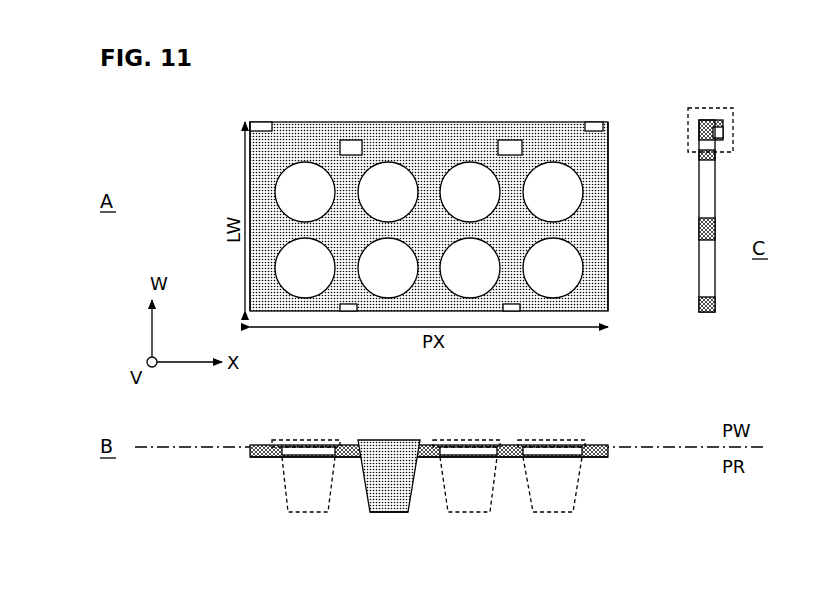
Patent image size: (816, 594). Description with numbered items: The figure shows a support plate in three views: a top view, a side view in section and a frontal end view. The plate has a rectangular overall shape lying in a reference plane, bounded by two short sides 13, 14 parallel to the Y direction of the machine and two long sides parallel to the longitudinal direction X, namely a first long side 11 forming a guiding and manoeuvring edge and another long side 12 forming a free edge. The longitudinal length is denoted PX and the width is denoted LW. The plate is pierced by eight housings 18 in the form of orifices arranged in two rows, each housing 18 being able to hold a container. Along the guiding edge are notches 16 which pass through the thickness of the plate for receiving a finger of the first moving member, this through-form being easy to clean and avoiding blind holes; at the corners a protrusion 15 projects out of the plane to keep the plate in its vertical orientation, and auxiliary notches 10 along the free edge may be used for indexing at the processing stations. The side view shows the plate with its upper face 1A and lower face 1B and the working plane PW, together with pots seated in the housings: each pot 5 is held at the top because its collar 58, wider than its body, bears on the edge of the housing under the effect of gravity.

The first long side 11 is at (481, 122).
The housing 18 is at (577, 171).
The notch 16 is at (352, 140).
The protrusion 15 is at (594, 122).
The short side 14 is at (250, 187).
The short side 13 is at (608, 266).
The auxiliary notch 10 is at (343, 312).
The long side 12 is at (545, 312).
The collar 58 is at (358, 440).
The pot 5 is at (409, 506).
The upper face 1A is at (592, 445).
The lower face 1B is at (592, 457).